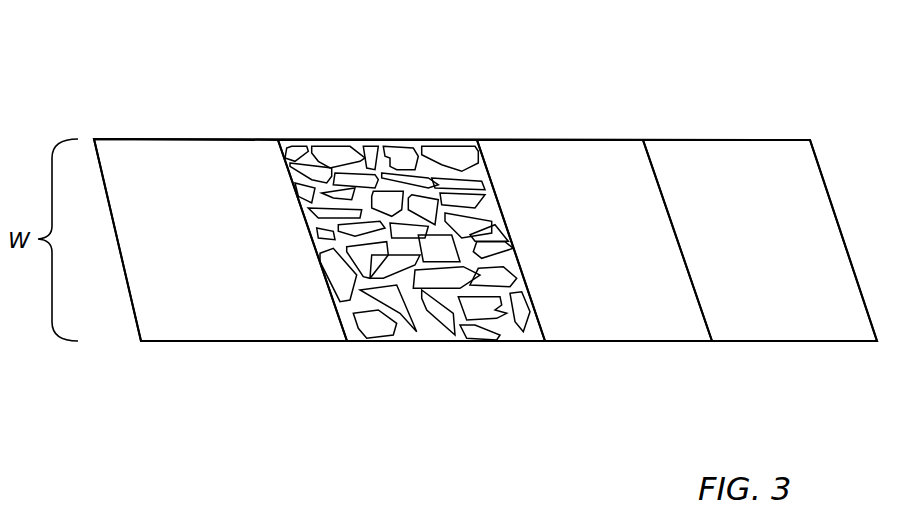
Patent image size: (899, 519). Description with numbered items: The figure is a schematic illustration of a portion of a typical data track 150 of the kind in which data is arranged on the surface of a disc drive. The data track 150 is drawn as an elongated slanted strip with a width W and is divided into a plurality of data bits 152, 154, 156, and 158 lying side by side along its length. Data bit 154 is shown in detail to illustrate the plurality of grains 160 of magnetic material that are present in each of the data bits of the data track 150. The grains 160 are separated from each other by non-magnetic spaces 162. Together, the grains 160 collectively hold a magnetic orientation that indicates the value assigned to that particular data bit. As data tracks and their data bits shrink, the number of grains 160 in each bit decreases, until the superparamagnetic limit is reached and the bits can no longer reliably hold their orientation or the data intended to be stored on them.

The data track 150 is at (370, 64).
The data bit 152 is at (195, 172).
The data bit 154 is at (387, 140).
The data bit 156 is at (573, 160).
The data bit 158 is at (757, 165).
The grains 160 is at (342, 158).
The non-magnetic spaces 162 is at (403, 332).